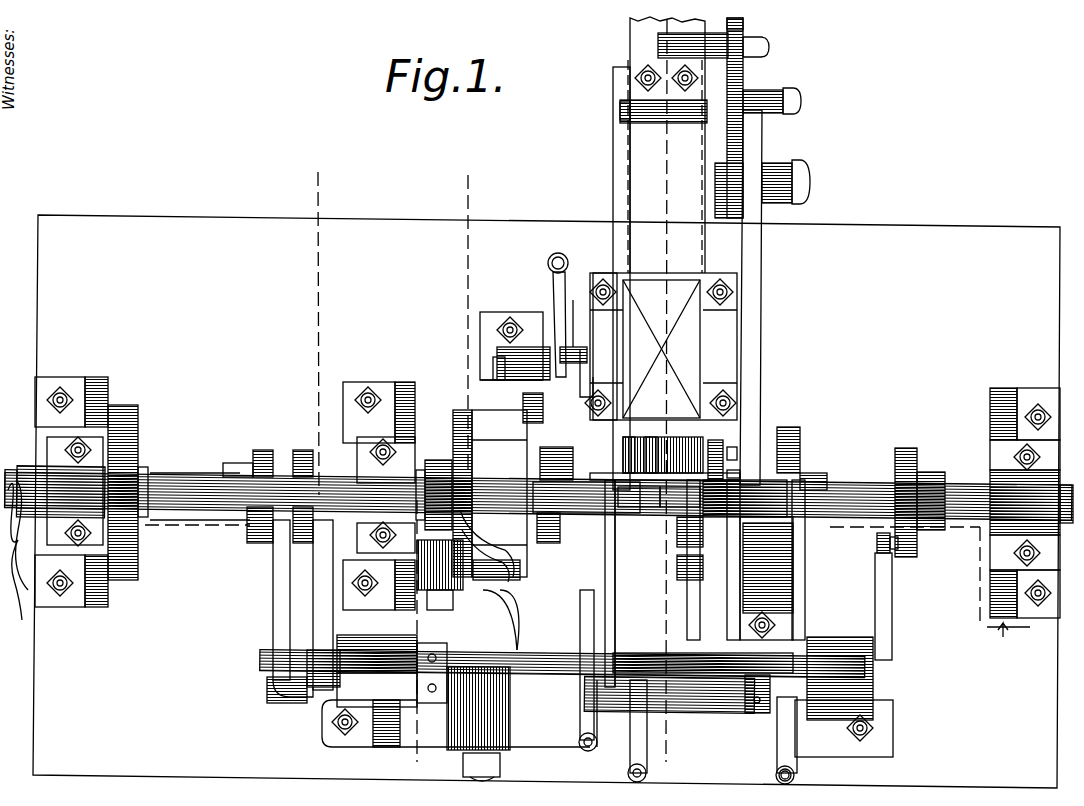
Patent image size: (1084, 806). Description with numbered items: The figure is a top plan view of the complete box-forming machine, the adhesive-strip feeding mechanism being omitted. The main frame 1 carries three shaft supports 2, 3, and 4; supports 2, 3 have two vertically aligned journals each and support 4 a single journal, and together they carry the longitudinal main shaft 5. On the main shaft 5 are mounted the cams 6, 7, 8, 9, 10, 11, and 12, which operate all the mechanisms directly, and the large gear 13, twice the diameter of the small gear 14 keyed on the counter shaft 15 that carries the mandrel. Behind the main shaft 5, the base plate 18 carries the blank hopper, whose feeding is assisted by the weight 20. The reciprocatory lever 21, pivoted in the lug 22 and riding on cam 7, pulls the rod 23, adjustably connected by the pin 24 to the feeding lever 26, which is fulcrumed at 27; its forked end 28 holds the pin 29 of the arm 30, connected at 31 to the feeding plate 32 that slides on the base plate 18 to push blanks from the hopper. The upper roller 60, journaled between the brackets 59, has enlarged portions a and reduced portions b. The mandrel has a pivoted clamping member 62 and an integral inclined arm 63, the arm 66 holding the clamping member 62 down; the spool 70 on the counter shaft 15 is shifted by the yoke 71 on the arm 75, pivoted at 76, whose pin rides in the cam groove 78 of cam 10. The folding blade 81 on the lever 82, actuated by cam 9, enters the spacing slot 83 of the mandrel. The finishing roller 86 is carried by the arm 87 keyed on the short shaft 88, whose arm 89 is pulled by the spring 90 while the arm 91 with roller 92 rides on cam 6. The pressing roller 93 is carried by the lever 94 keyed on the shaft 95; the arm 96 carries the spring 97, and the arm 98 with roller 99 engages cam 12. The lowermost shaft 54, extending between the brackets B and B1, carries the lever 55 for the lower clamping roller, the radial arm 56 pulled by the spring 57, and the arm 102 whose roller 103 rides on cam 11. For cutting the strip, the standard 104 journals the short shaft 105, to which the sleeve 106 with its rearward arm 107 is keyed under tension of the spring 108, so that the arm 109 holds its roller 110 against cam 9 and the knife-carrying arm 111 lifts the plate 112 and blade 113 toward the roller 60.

The main frame 1 is at (546, 501).
The shaft-carrying support 2 is at (108, 380).
The shaft-carrying support 3 is at (350, 383).
The shaft-carrying support 4 is at (997, 460).
The main shaft 5 is at (205, 470).
The cam 6 is at (928, 432).
The cam 7 is at (812, 478).
The cam 8 is at (740, 470).
The cam 9 is at (515, 555).
The cam 10 is at (520, 578).
The cam 11 is at (300, 450).
The cam 12 is at (250, 520).
The large gear 13 is at (133, 410).
The small gear 14 is at (135, 467).
The counter shaft 15 is at (200, 478).
The base plate 18 is at (762, 240).
The weight 20 is at (645, 283).
The reciprocatory lever 21 is at (790, 583).
The lug 22 is at (776, 625).
The rod 23 is at (762, 285).
The pin 24 is at (800, 100).
The blank-and-adhesive-strip-feeding lever 26 is at (745, 85).
The fulcrum 27 is at (805, 183).
The forked end 28 is at (745, 25).
The pin 29 is at (770, 47).
The arm 30 is at (660, 60).
The connection 31 is at (620, 112).
The blank-and-adhesive-strip-feeding plate 32 is at (690, 165).
The shaft 54 is at (305, 665).
The lever 55 is at (735, 468).
The radial arm 56 is at (583, 712).
The spring 57 is at (570, 752).
The brackets 59 is at (720, 448).
The upper roller 60 is at (688, 445).
The clamping member 62 is at (600, 517).
The inclined arm 63 is at (548, 528).
The arm 66 is at (499, 493).
The spool 70 is at (420, 470).
The yoke 71 is at (437, 480).
The arm 75 is at (400, 643).
The pivot 76 is at (505, 738).
The cam groove 78 is at (460, 420).
The folding blade 81 is at (690, 545).
The operating lever 82 is at (690, 585).
The spacing slot 83 is at (785, 460).
The finishing roller 86 is at (800, 478).
The arm 87 is at (877, 540).
The short shaft 88 is at (745, 705).
The arm 89 is at (790, 725).
The spring 90 is at (796, 775).
The arm 91 is at (892, 605).
The roller 92 is at (900, 543).
The roller 93 is at (605, 540).
The lever 94 is at (616, 630).
The shaft 95 is at (705, 690).
The arm 96 is at (620, 738).
The spring 97 is at (650, 772).
The arm 98 is at (305, 660).
The roller 99 is at (258, 543).
The arm 102 is at (283, 640).
The roller 103 is at (318, 608).
The standard 104 is at (495, 333).
The short shaft 105 is at (497, 355).
The sleeve 106 is at (572, 320).
The arm 107 is at (556, 280).
The spring 108 is at (553, 253).
The lever 109 is at (485, 362).
The roller 110 is at (455, 378).
The knife-carrying arm 111 is at (533, 340).
The plate 112 is at (639, 497).
The blade 113 is at (680, 497).
The enlarged portions a is at (636, 443).
The reduced portions b is at (652, 443).
The bracket B is at (325, 728).
The bracket B1 is at (893, 728).